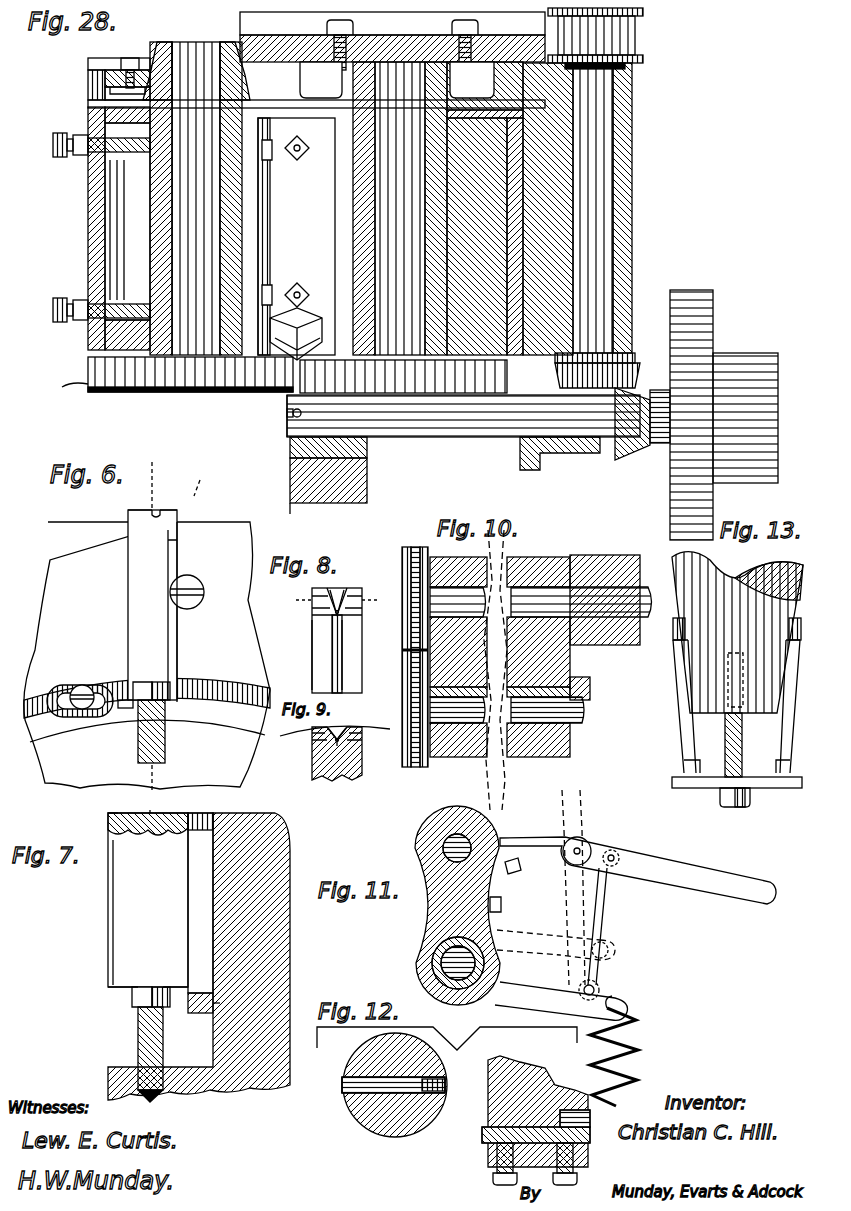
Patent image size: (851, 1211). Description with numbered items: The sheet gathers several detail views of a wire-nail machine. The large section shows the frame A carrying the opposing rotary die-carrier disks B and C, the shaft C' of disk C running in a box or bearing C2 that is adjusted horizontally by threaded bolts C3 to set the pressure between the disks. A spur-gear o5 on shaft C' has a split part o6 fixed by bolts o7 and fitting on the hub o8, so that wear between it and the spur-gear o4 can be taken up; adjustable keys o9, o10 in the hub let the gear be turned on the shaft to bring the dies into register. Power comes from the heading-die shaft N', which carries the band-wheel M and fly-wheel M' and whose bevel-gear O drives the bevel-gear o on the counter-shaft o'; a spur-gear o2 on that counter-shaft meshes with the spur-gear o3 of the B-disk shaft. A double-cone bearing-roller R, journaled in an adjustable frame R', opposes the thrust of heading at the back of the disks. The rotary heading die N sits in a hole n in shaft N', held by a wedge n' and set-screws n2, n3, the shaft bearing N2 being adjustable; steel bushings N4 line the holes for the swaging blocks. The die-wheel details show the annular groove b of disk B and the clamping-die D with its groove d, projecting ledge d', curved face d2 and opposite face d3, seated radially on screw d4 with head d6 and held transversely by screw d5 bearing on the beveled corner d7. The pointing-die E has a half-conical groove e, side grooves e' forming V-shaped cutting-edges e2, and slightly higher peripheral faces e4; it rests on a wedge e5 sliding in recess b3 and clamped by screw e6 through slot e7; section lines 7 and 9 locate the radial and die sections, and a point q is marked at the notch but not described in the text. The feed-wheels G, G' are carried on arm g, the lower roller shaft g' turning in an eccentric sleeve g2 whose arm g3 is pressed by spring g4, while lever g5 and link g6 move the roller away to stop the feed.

In FIG. 28, the bevel-gear o is at (607, 362).
In FIG. 28, the bevel-gear O is at (635, 460).
In FIG. 28, the counter-shaft o' is at (598, 208).
In FIG. 28, the spur-gear o2 is at (643, 36).
In FIG. 28, the spur-gear o3 is at (401, 43).
In FIG. 28, the spur-gear o4 is at (397, 80).
In FIG. 28, the spur-gear o5 is at (92, 62).
In FIG. 28, the split part o6 is at (88, 88).
In FIG. 28, the bolts o7 is at (130, 58).
In FIG. 28, the hub o8 is at (166, 44).
In FIG. 13, the adjustable key o9 is at (675, 751).
In FIG. 13, the adjustable key o10 is at (795, 757).
In FIG. 28, the rotary die-carrier disk C is at (190, 374).
In FIG. 28, the shaft C' is at (196, 198).
In FIG. 13, the shaft C' is at (737, 632).
In FIG. 28, the box or bearing C2 is at (119, 228).
In FIG. 28, the threaded bolts C3 is at (60, 160).
In FIG. 28, the double-cone bearing-roller R is at (296, 306).
In FIG. 28, the frame R' is at (296, 236).
In FIG. 28, the rotary die-carrier disk B is at (406, 202).
In FIG. 6, the rotary die-carrier disk B is at (147, 655).
In FIG. 7, the rotary die-carrier disk B is at (199, 956).
In FIG. 28, the peripheral faces e4 is at (66, 388).
In FIG. 8, the peripheral faces e4 is at (320, 607).
In FIG. 9, the peripheral faces e4 is at (318, 731).
In FIG. 28, the rotary heading die N is at (258, 420).
In FIG. 12, the rotary heading die N is at (450, 1089).
In FIG. 28, the heading-die shaft N' is at (463, 416).
In FIG. 12, the heading-die shaft N' is at (337, 1102).
In FIG. 28, the box or bearing N2 is at (367, 445).
In FIG. 12, the steel bushings N4 is at (538, 1080).
In FIG. 12, the slot or hole n is at (477, 1104).
In FIG. 12, the wedge n' is at (520, 1116).
In FIG. 28, the set-screw n2 is at (290, 413).
In FIG. 12, the set-screw n2 is at (493, 1179).
In FIG. 12, the set-screw n3 is at (577, 1179).
In FIG. 28, the frame A is at (367, 480).
In FIG. 28, the band-wheel M is at (745, 418).
In FIG. 28, the fly-wheel M' is at (691, 415).
In FIG. 6, the clamping-die D is at (152, 605).
In FIG. 8, the clamping-die D is at (362, 659).
In FIG. 7, the clamping-die D is at (148, 900).
In FIG. 6, the groove d is at (145, 499).
In FIG. 8, the groove d is at (339, 614).
In FIG. 7, the groove d is at (114, 804).
In FIG. 6, the projecting ledge d' is at (188, 595).
In FIG. 8, the projecting ledge d' is at (343, 654).
In FIG. 6, the curved face d2 is at (165, 510).
In FIG. 8, the curved face d2 is at (350, 655).
In FIG. 6, the face d3 is at (130, 512).
In FIG. 8, the face d3 is at (320, 655).
In FIG. 7, the face d3 is at (145, 803).
In FIG. 6, the threaded bolt or screw d4 is at (165, 739).
In FIG. 7, the threaded bolt or screw d4 is at (140, 1037).
In FIG. 6, the screw d5 is at (196, 582).
In FIG. 6, the polygonal head d6 is at (147, 682).
In FIG. 7, the polygonal head d6 is at (150, 988).
In FIG. 6, the beveled edge or corner d7 is at (177, 627).
In FIG. 7, the beveled edge or corner d7 is at (110, 906).
In FIG. 8, the pointing-die E is at (350, 590).
In FIG. 9, the pointing-die E is at (350, 751).
In FIG. 7, the pointing-die E is at (205, 818).
In FIG. 8, the half-conical groove e is at (359, 613).
In FIG. 9, the half-conical groove e is at (351, 723).
In FIG. 8, the oppositely-turned grooves e' is at (334, 590).
In FIG. 9, the oppositely-turned grooves e' is at (351, 722).
In FIG. 8, the V-shaped cutting-edges e2 is at (320, 598).
In FIG. 9, the V-shaped cutting-edges e2 is at (320, 743).
In FIG. 6, the wedge e5 is at (125, 708).
In FIG. 7, the wedge e5 is at (197, 993).
In FIG. 6, the clamp-screw e6 is at (88, 685).
In FIG. 6, the slot e7 is at (78, 709).
In FIG. 6, the annular groove b is at (147, 740).
In FIG. 7, the annular groove b is at (148, 1020).
In FIG. 6, the groove or recess b3 is at (222, 685).
In FIG. 7, the groove or recess b3 is at (220, 1005).
In FIG. 6, the section line 7 is at (175, 633).
In FIG. 8, the section line 9 is at (336, 599).
In FIG. 9, the notch point q is at (338, 738).
In FIG. 10, the feed-wheel G is at (405, 649).
In FIG. 10, the feed-wheel G' is at (403, 728).
In FIG. 10, the frame or arm g is at (535, 645).
In FIG. 10, the shaft g' is at (541, 694).
In FIG. 11, the shaft g' is at (436, 905).
In FIG. 10, the eccentric sleeve g2 is at (480, 688).
In FIG. 11, the eccentric sleeve g2 is at (465, 990).
In FIG. 10, the projecting arm or lever g3 is at (558, 760).
In FIG. 11, the projecting arm or lever g3 is at (561, 925).
In FIG. 11, the spring or weight g4 is at (638, 1033).
In FIG. 11, the lever g5 is at (638, 870).
In FIG. 11, the link g6 is at (606, 917).